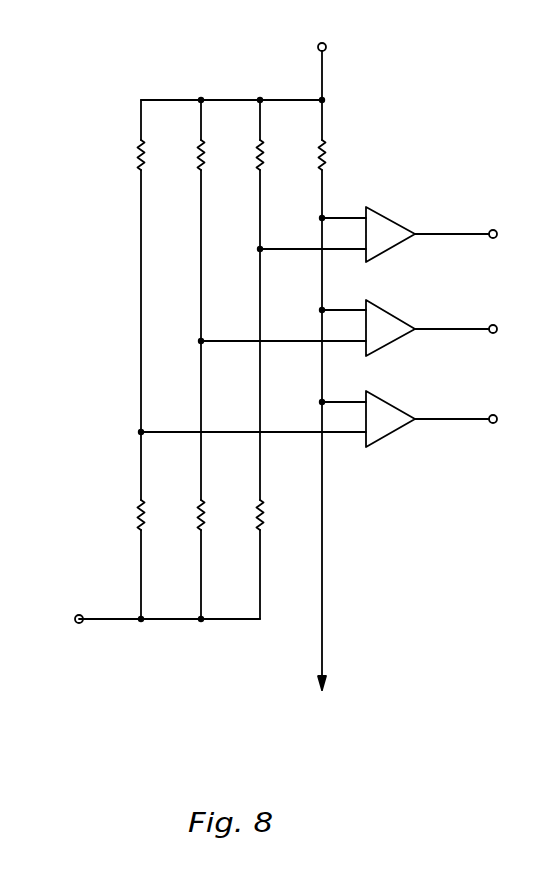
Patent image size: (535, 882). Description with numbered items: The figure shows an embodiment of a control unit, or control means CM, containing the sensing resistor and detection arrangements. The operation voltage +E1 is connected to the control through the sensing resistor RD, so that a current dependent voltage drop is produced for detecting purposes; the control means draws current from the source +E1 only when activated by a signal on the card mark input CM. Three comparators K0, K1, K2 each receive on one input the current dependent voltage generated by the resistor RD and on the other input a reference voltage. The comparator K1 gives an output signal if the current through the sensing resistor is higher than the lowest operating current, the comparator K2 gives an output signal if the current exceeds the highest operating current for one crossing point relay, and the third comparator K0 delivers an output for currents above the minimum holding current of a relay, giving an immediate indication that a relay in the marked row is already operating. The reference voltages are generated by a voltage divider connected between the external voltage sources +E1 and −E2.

The card mark input CM is at (277, 724).
The operation voltage source E1 is at (326, 32).
The external voltage source E2 is at (49, 619).
The sensing resistor RD is at (328, 157).
The third comparator K0 is at (392, 213).
The comparator K1 is at (392, 307).
The comparator K2 is at (392, 398).